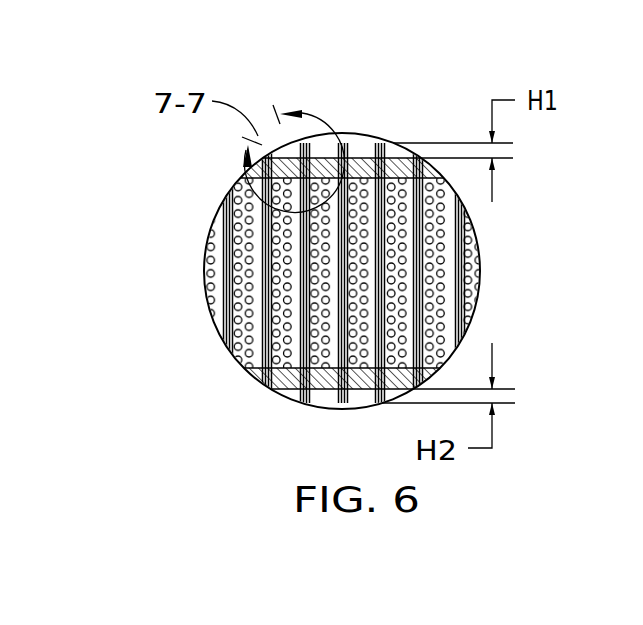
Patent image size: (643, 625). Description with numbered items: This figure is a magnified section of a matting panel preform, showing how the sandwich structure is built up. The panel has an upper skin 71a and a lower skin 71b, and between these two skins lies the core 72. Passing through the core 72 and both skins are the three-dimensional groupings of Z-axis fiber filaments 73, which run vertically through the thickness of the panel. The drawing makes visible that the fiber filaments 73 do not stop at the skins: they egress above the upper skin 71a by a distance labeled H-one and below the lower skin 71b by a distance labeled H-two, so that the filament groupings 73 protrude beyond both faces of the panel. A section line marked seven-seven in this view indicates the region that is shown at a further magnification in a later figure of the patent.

The skin 71a is at (353, 158).
The skin 71b is at (360, 390).
The core 72 is at (440, 280).
The 3-D groupings of Z-axis fiber filaments 73 is at (260, 263).